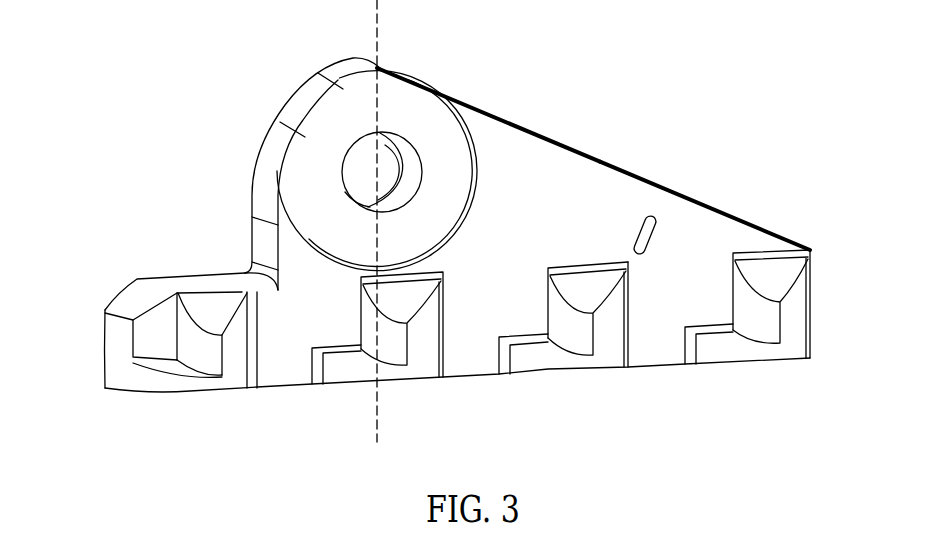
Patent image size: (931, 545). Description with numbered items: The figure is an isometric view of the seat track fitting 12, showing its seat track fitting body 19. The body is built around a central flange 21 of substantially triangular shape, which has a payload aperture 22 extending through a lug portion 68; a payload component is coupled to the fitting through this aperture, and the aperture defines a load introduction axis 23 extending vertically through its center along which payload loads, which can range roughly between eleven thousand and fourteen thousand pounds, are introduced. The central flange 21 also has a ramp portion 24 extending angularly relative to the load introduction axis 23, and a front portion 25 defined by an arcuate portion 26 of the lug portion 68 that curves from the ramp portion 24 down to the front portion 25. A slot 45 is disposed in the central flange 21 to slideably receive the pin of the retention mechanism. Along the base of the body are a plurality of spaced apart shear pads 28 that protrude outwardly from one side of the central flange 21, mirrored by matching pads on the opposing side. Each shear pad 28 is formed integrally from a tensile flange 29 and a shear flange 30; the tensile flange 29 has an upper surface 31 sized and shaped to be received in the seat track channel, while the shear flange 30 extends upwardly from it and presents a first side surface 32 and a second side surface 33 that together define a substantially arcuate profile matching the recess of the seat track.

The seat track fitting 12 is at (782, 88).
The seat track fitting body 19 is at (750, 242).
The central flange 21 is at (563, 165).
The payload aperture 22 is at (368, 173).
The load introduction axis 23 is at (376, 28).
The ramp portion 24 is at (730, 210).
The front portion 25 is at (123, 298).
The arcuate portion 26 is at (308, 97).
The shear pads 28 is at (195, 397).
The tensile flange 29 is at (150, 378).
The shear flange 30 is at (240, 357).
The upper surface 31 is at (163, 357).
The first side surface 32 is at (560, 322).
The second side surface 33 is at (616, 334).
The slot 45 is at (660, 221).
The lug portion 68 is at (418, 107).